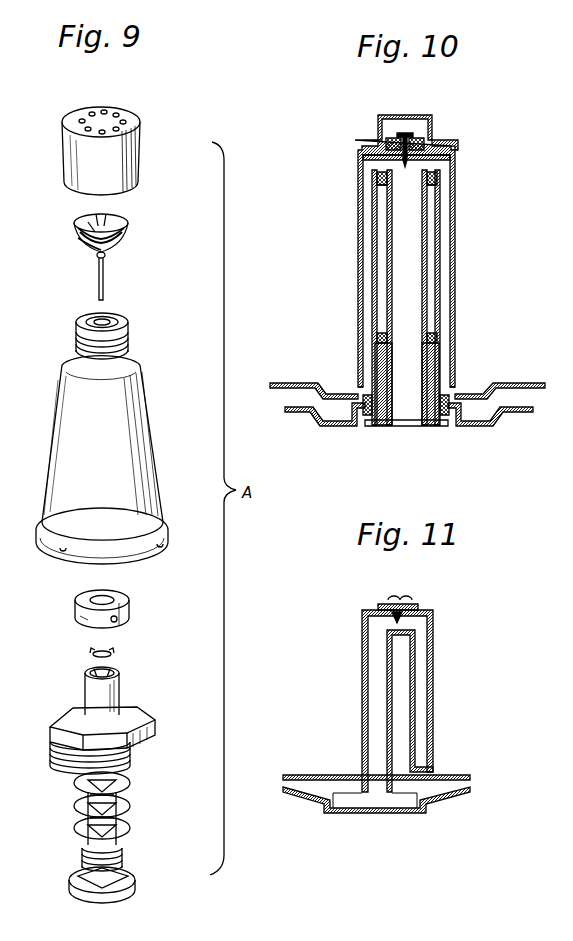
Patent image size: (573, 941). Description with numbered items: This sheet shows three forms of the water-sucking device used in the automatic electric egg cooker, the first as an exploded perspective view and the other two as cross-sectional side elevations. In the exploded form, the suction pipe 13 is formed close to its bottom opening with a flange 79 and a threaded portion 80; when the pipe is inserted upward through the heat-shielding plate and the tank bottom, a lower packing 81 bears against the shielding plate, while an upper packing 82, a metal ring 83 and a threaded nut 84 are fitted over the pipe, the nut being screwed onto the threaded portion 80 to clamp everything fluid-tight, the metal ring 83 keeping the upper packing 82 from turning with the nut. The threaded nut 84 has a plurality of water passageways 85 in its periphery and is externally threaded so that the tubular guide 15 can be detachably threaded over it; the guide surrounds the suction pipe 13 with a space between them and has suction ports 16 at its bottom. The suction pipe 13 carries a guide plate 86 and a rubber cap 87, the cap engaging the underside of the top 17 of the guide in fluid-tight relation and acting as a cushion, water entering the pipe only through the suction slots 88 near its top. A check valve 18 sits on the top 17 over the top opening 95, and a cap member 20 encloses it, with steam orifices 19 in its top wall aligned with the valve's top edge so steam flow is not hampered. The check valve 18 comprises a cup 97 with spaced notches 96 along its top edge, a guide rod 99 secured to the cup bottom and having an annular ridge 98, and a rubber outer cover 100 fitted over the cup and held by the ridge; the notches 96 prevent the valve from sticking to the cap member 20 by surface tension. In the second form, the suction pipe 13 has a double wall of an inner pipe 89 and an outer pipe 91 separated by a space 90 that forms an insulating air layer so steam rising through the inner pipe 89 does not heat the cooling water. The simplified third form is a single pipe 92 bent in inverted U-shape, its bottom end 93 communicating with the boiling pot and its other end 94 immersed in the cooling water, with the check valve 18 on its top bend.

In FIG. 9, the suction pipe 13 is at (80, 812).
In FIG. 10, the suction pipe 13 is at (446, 338).
In FIG. 9, the tubular guide 15 is at (142, 454).
In FIG. 9, the suction ports 16 is at (160, 548).
In FIG. 10, the suction ports 16 is at (348, 385).
In FIG. 9, the top of the tubular guide 17 is at (76, 321).
In FIG. 9, the check valve 18 is at (126, 238).
In FIG. 10, the check valve 18 is at (380, 140).
In FIG. 11, the check valve 18 is at (407, 606).
In FIG. 9, the steam orifices 19 is at (117, 113).
In FIG. 10, the steam orifices 19 is at (437, 138).
In FIG. 9, the cap member 20 is at (140, 148).
In FIG. 10, the cap member 20 is at (415, 115).
In FIG. 9, the flange 79 is at (82, 888).
In FIG. 9, the threaded portion 80 is at (124, 864).
In FIG. 9, the lower packing 81 is at (132, 828).
In FIG. 9, the upper packing 82 is at (132, 807).
In FIG. 9, the metal ring 83 is at (132, 784).
In FIG. 9, the threaded nut 84 is at (150, 716).
In FIG. 9, the water passageways 85 is at (148, 752).
In FIG. 9, the guide plate 86 is at (112, 656).
In FIG. 9, the rubber cap 87 is at (129, 611).
In FIG. 9, the suction slots 88 is at (122, 698).
In FIG. 10, the inner pipe 89 is at (428, 231).
In FIG. 10, the space 90 is at (433, 271).
In FIG. 10, the outer pipe 91 is at (446, 301).
In FIG. 11, the single pipe 92 is at (434, 660).
In FIG. 11, the bottom end 93 is at (378, 795).
In FIG. 11, the other end 94 is at (425, 766).
In FIG. 9, the top opening of the guide tube 95 is at (110, 319).
In FIG. 9, the notches 96 is at (120, 217).
In FIG. 9, the cup 97 is at (84, 218).
In FIG. 9, the annular ridge 98 is at (106, 257).
In FIG. 9, the guide rod 99 is at (98, 276).
In FIG. 9, the outer cover 100 is at (78, 241).